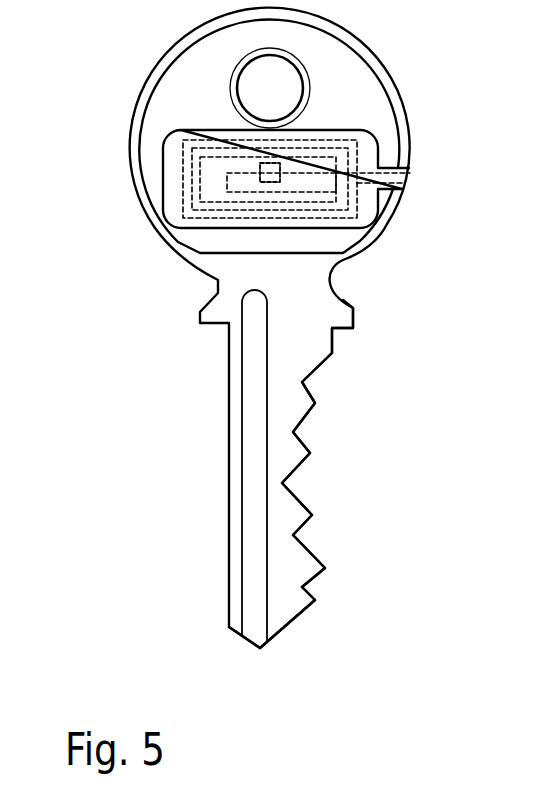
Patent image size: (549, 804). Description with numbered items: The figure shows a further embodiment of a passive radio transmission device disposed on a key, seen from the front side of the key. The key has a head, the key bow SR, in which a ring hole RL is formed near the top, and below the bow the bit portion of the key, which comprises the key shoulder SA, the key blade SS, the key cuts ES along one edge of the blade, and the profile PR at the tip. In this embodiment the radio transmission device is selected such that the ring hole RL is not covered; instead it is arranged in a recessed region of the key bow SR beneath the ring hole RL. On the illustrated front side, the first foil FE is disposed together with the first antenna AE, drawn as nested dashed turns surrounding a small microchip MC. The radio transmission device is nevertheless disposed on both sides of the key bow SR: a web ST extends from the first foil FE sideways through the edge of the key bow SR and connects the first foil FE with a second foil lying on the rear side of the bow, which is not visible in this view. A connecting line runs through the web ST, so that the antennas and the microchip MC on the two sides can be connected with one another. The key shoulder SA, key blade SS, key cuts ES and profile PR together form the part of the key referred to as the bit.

The key bow SR is at (337, 84).
The ring hole RL is at (270, 88).
The first foil FE is at (360, 147).
The web ST is at (405, 177).
The first antenna AE is at (183, 183).
The microchip MC is at (260, 170).
The key shoulder SA is at (340, 320).
The key cuts ES is at (297, 430).
The key blade SS is at (235, 540).
The profile PR is at (252, 625).